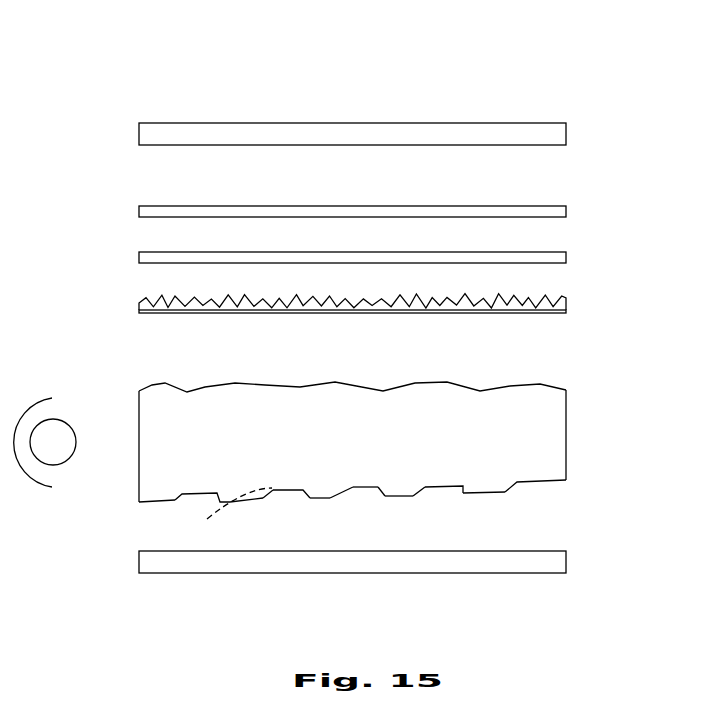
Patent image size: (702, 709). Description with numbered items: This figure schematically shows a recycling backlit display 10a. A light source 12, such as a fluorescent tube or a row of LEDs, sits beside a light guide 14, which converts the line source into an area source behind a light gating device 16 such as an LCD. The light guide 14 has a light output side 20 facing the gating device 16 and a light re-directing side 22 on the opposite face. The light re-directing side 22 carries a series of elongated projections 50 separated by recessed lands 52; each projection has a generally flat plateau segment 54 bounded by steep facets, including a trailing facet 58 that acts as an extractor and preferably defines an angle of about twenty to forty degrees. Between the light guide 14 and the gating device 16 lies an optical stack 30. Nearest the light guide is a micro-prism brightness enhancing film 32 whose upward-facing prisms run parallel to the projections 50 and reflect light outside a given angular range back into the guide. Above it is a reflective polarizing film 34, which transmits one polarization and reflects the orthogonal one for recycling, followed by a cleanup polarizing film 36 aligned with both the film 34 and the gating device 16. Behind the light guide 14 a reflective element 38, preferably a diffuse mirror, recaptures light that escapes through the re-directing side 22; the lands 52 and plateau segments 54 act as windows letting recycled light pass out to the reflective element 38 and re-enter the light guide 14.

The recycling backlit display 10a is at (152, 80).
The light gating device 16 is at (495, 122).
The optical stack 30 is at (419, 243).
The cleanup polarizing film 36 is at (540, 205).
The reflective polarizing film 34 is at (540, 252).
The micro-prism film 32 is at (566, 302).
The light output side 20 is at (408, 380).
The light guide 14 is at (394, 443).
The light source 12 is at (60, 464).
The elongated projections 50 is at (158, 503).
The light re-directing side 22 is at (248, 500).
The trailing facet 58 is at (263, 500).
The lands 52 is at (367, 487).
The plateau segment 54 is at (400, 495).
The reflective element 38 is at (518, 550).